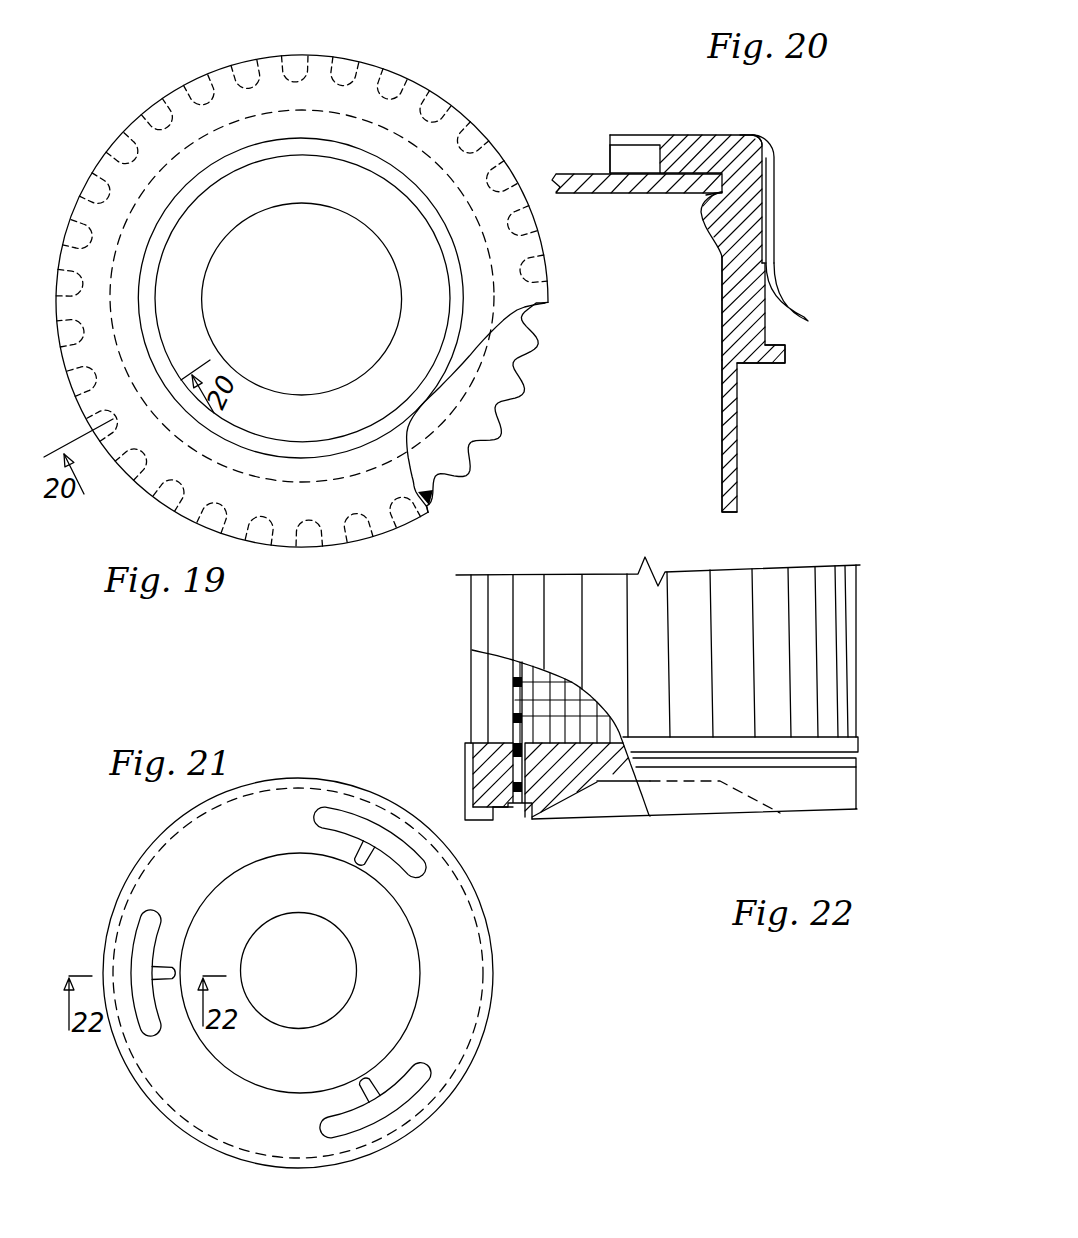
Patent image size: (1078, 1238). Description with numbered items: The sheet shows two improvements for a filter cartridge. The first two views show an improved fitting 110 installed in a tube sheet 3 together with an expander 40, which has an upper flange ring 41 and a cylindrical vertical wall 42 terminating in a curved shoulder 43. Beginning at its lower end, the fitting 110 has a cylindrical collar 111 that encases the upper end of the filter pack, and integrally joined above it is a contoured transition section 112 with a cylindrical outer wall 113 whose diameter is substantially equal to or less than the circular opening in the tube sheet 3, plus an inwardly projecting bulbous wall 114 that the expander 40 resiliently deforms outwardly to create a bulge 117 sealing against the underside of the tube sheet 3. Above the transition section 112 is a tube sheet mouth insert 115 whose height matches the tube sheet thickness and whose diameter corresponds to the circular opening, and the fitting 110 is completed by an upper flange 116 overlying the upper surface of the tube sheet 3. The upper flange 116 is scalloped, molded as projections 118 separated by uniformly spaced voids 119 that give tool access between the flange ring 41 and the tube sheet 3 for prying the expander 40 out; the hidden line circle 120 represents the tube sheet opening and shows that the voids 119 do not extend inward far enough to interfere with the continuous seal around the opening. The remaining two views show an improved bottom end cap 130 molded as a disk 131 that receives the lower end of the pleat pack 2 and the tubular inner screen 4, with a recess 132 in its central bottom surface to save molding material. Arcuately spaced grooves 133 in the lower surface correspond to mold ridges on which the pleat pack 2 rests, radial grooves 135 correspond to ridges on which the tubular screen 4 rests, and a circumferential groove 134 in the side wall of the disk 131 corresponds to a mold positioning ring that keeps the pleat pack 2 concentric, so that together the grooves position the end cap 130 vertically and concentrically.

In FIG. 22, the pleat pack 2 is at (505, 623).
In FIG. 20, the tube sheet 3 is at (612, 187).
In FIG. 22, the tubular inner screen 4 is at (527, 710).
In FIG. 20, the expander 40 is at (785, 137).
In FIG. 19, the upper flange ring 41 is at (141, 153).
In FIG. 20, the upper flange ring 41 is at (645, 137).
In FIG. 19, the cylindrical vertical wall 42 is at (401, 174).
In FIG. 20, the cylindrical vertical wall 42 is at (771, 191).
In FIG. 19, the curved shoulder 43 is at (430, 370).
In FIG. 20, the curved shoulder 43 is at (792, 307).
In FIG. 20, the fitting 110 is at (788, 391).
In FIG. 19, the cylindrical collar 111 is at (199, 247).
In FIG. 20, the cylindrical collar 111 is at (723, 438).
In FIG. 20, the transition section 112 is at (720, 305).
In FIG. 20, the cylindrical outer wall 113 is at (719, 288).
In FIG. 20, the bulbous wall 114 is at (761, 230).
In FIG. 20, the tube sheet mouth insert 115 is at (675, 194).
In FIG. 19, the upper flange 116 is at (438, 445).
In FIG. 20, the upper flange 116 is at (707, 152).
In FIG. 20, the bulge 117 is at (710, 220).
In FIG. 19, the projections 118 is at (490, 433).
In FIG. 20, the projections 118 is at (610, 154).
In FIG. 19, the voids 119 is at (512, 410).
In FIG. 20, the voids 119 is at (633, 158).
In FIG. 19, the hidden line circle 120 is at (278, 485).
In FIG. 21, the bottom end cap 130 is at (548, 1030).
In FIG. 22, the bottom end cap 130 is at (687, 900).
In FIG. 21, the disk 131 is at (463, 1067).
In FIG. 22, the disk 131 is at (792, 797).
In FIG. 21, the recess 132 is at (272, 977).
In FIG. 22, the recess 132 is at (594, 807).
In FIG. 21, the grooves 133 is at (390, 847).
In FIG. 22, the grooves 133 is at (498, 820).
In FIG. 21, the circumferential groove 134 is at (304, 791).
In FIG. 22, the circumferential groove 134 is at (407, 739).
In FIG. 21, the radial grooves 135 is at (363, 853).
In FIG. 22, the radial grooves 135 is at (518, 820).